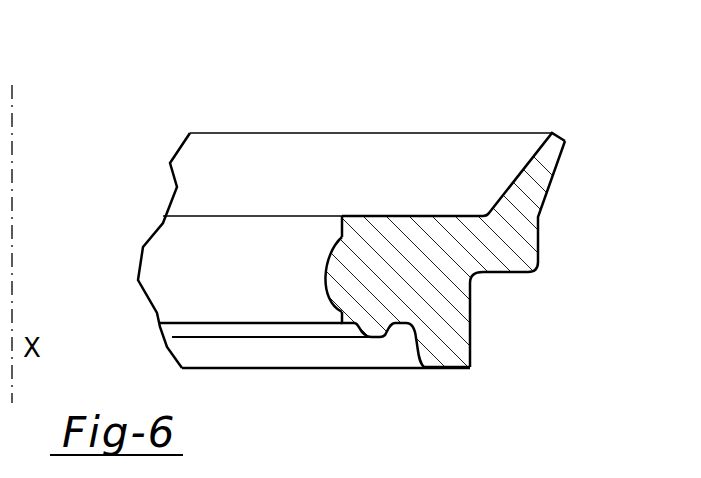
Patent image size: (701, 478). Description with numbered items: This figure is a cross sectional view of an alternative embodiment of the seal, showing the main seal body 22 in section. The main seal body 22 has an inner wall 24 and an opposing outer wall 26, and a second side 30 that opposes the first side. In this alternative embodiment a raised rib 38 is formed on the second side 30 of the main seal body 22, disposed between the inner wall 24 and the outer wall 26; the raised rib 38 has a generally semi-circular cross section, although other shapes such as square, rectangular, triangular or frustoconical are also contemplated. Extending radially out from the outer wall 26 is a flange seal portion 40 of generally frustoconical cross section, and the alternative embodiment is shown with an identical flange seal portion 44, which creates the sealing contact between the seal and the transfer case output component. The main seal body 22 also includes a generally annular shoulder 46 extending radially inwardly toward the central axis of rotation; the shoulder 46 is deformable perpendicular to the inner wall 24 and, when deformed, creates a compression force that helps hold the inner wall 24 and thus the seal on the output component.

The main seal body 22 is at (448, 237).
The inner wall 24 is at (342, 236).
The outer wall 26 is at (470, 318).
The second side 30 is at (400, 323).
The raised rib 38 is at (368, 323).
The flange seal portion 40 is at (537, 182).
The flange seal portion 44 is at (530, 160).
The generally annular shoulder 46 is at (330, 287).